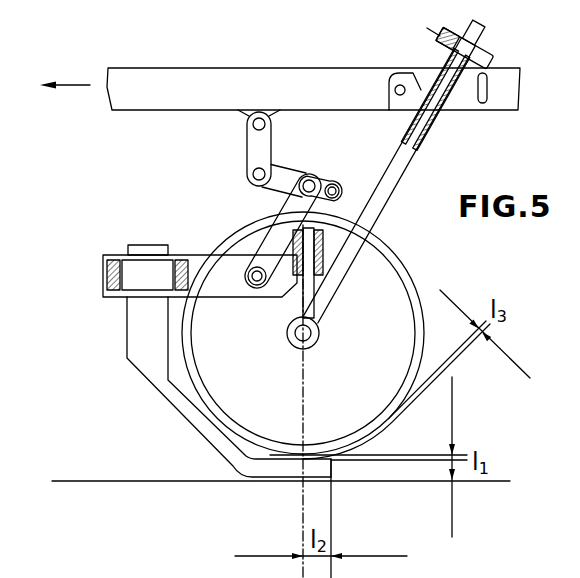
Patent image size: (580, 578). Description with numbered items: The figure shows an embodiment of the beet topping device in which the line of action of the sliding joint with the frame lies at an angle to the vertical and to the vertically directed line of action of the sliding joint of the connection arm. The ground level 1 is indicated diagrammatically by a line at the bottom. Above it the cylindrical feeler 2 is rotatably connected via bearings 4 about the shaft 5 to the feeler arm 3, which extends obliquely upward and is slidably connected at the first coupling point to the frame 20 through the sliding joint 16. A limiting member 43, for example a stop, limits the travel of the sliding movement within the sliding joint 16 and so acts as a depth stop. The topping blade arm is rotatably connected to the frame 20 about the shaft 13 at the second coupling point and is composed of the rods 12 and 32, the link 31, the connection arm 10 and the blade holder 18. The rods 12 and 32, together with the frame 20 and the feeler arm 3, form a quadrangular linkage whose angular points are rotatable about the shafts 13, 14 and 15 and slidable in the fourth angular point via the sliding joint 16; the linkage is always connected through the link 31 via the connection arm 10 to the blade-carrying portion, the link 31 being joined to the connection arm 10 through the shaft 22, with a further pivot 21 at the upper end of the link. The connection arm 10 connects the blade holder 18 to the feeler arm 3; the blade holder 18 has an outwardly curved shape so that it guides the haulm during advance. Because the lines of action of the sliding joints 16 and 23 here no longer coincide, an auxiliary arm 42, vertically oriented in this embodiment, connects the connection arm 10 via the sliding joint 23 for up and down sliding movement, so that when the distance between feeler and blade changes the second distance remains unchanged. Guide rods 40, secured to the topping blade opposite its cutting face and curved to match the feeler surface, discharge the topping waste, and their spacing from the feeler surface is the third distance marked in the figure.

The ground level 1 is at (98, 480).
The feeler 2 is at (385, 280).
The feeler arm 3 is at (410, 143).
The bearings 4 is at (290, 343).
The shaft 5 is at (313, 343).
The connection arm 10 is at (200, 263).
The rod 12 is at (248, 152).
The shaft 13 is at (248, 127).
The shaft 14 is at (248, 180).
The shaft 15 is at (337, 183).
The sliding joint 16 is at (425, 82).
The blade holder 18 is at (170, 390).
The frame 20 is at (195, 76).
The pivot pin 21 is at (310, 178).
The shaft 22 is at (248, 266).
The sliding joint 23 is at (322, 265).
The link 31 is at (280, 235).
The rod 32 is at (283, 172).
The guide rods 40 is at (370, 448).
The auxiliary arm 42 is at (302, 288).
The limiting member 43 is at (488, 57).